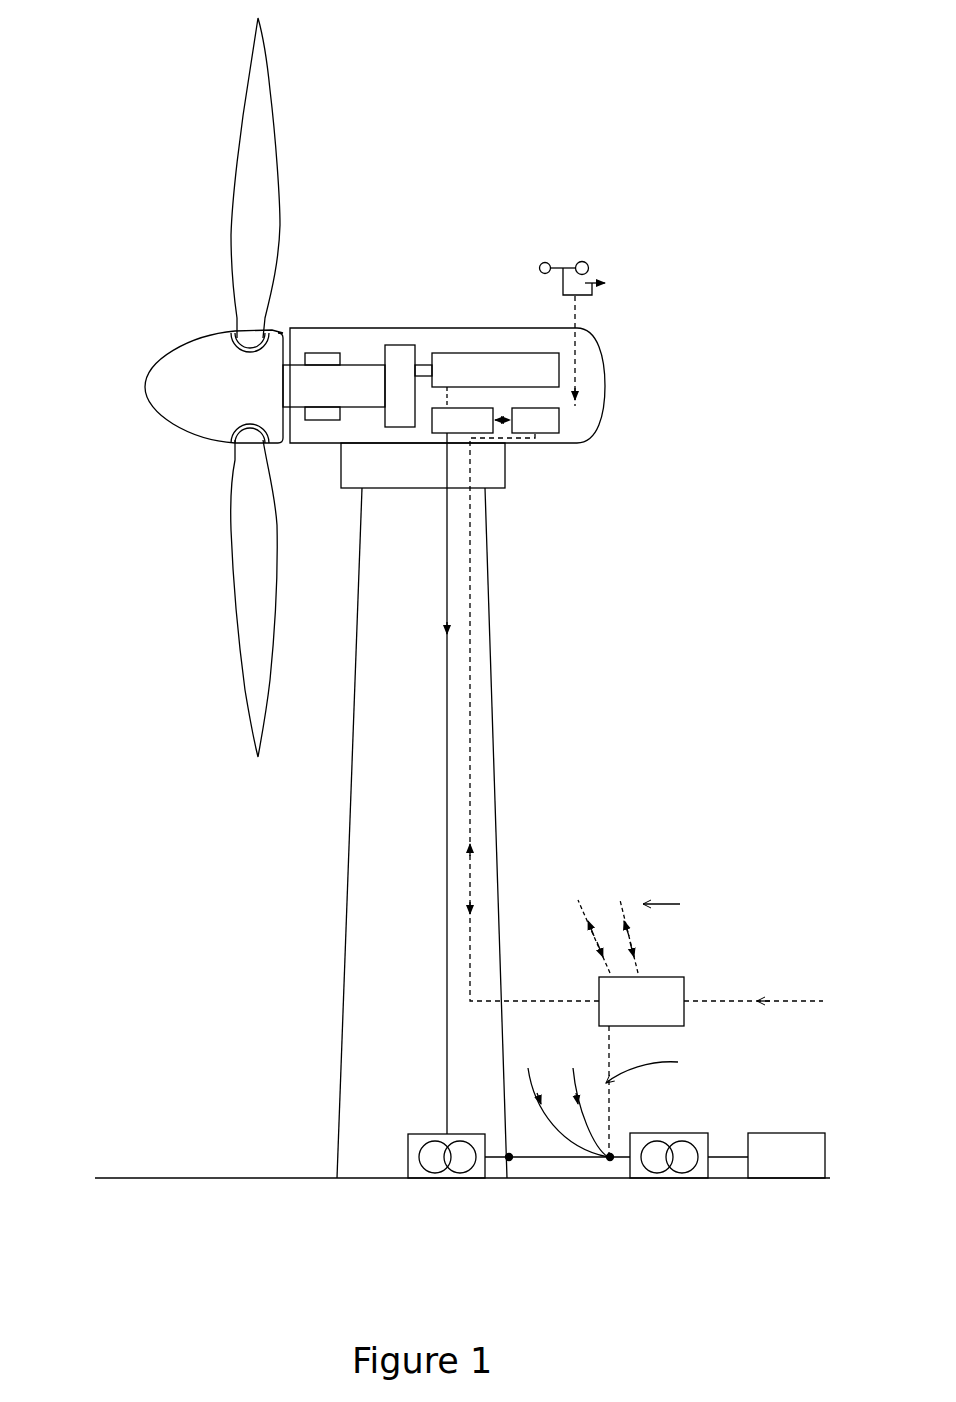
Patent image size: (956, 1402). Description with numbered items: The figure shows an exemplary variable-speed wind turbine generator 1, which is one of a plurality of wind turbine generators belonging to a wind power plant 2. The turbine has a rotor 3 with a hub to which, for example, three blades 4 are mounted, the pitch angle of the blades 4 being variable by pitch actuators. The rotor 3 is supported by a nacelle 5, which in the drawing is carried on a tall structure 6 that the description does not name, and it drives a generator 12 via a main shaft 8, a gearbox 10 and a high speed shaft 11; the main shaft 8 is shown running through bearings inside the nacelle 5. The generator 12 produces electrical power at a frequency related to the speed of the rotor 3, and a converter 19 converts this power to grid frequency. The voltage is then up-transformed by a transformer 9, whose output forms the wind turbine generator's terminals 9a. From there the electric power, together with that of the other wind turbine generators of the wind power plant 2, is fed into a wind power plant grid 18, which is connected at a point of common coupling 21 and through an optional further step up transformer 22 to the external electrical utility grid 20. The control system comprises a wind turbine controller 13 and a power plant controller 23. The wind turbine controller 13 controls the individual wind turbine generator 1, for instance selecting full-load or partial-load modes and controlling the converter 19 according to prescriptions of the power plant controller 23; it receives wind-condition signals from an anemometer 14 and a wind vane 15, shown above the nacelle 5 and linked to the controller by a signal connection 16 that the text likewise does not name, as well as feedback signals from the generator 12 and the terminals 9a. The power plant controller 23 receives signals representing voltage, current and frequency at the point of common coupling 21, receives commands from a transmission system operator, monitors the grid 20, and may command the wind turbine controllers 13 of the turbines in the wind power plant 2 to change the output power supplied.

The wind turbine generator 1 is at (440, 158).
The wind power plant 2 is at (140, 208).
The rotor 3 is at (145, 394).
The blades 4 is at (276, 137).
The nacelle 5 is at (322, 328).
The tower 6 is at (345, 929).
The main shaft 8 is at (357, 365).
The transformer 9 is at (418, 1135).
The terminals 9a is at (509, 1162).
The gearbox 10 is at (395, 345).
The high speed shaft 11 is at (428, 365).
The generator 12 is at (492, 353).
The wind turbine controller 13 is at (580, 433).
The anemometer 14 is at (582, 262).
The wind vane 15 is at (614, 268).
The sensor signal line 16 is at (578, 357).
The wind power plant grid 18 is at (565, 1158).
The converter 19 is at (445, 435).
The utility grid 20 is at (797, 1178).
The point of common coupling 21 is at (610, 1162).
The further step up transformer 22 is at (697, 1178).
The power plant controller 23 is at (676, 977).